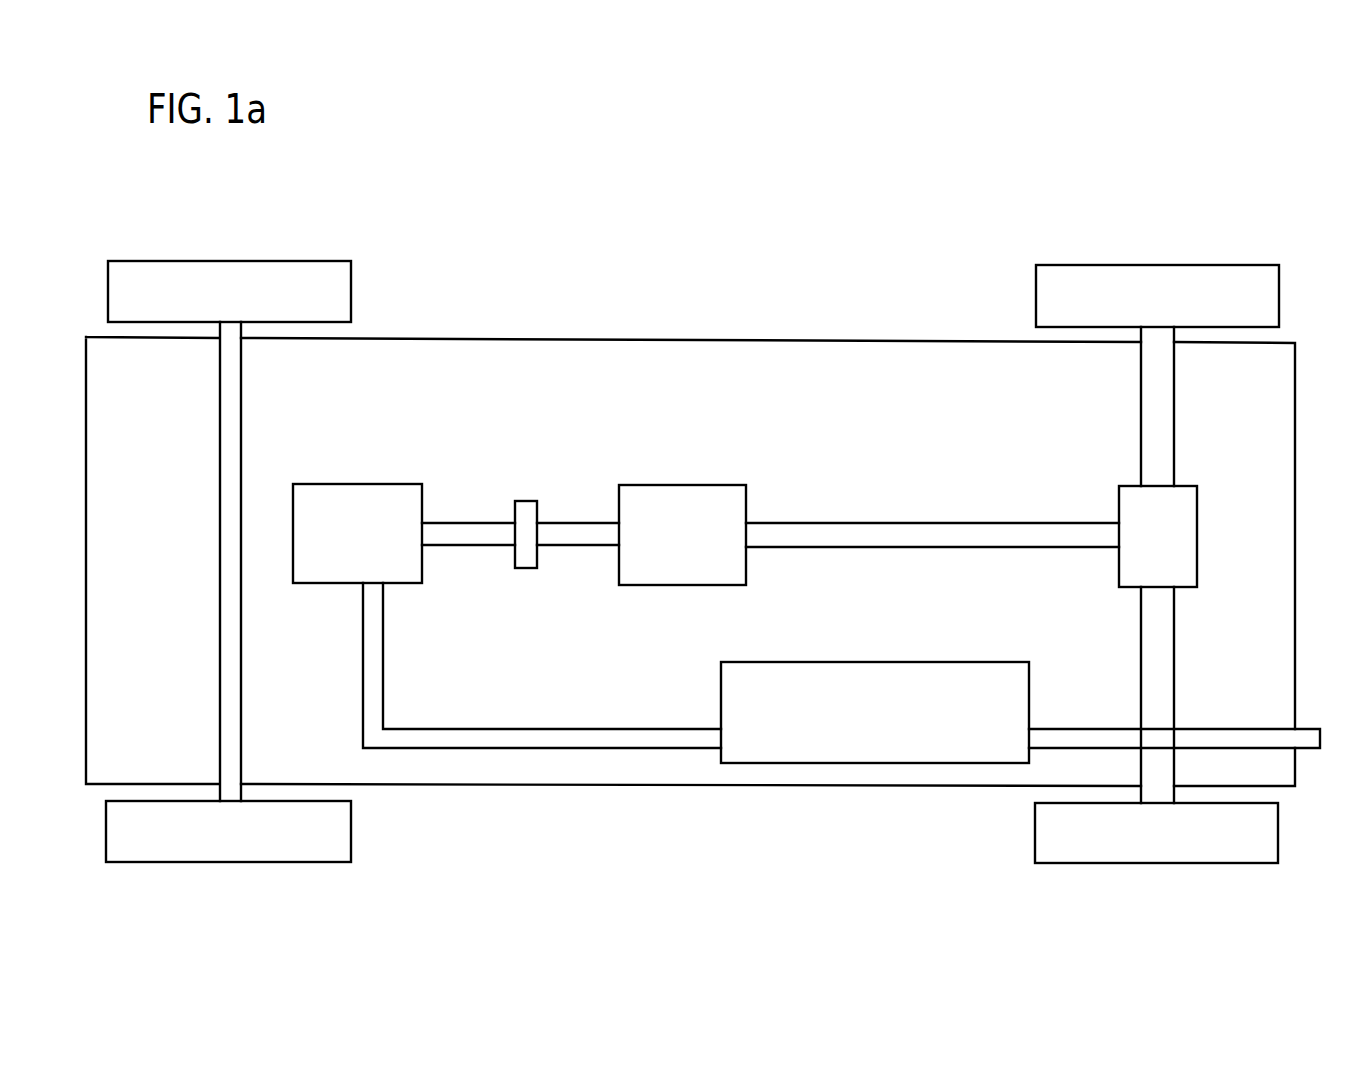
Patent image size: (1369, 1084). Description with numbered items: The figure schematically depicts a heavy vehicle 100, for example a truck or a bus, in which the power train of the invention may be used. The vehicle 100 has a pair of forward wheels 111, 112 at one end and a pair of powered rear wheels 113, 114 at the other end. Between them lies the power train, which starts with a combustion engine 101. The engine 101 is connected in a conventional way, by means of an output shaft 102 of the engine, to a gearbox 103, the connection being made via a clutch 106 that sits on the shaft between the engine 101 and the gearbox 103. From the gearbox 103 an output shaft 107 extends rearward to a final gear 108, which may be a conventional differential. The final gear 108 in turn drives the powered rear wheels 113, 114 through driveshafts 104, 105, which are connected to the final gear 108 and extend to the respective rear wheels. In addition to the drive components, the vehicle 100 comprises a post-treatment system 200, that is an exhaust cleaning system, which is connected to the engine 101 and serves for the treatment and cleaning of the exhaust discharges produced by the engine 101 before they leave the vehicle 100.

The heavy vehicle 100 is at (603, 155).
The combustion engine 101 is at (332, 572).
The output shaft 102 is at (449, 527).
The gearbox 103 is at (685, 495).
The driveshaft 104 is at (1163, 403).
The driveshaft 105 is at (1167, 704).
The clutch 106 is at (520, 557).
The output shaft 107 is at (1033, 540).
The final gear 108 is at (1188, 534).
The forward wheel 111 is at (340, 296).
The forward wheel 112 is at (345, 836).
The powered rear wheel 113 is at (1272, 292).
The powered rear wheel 114 is at (1272, 838).
The post-treatment system 200 is at (895, 757).